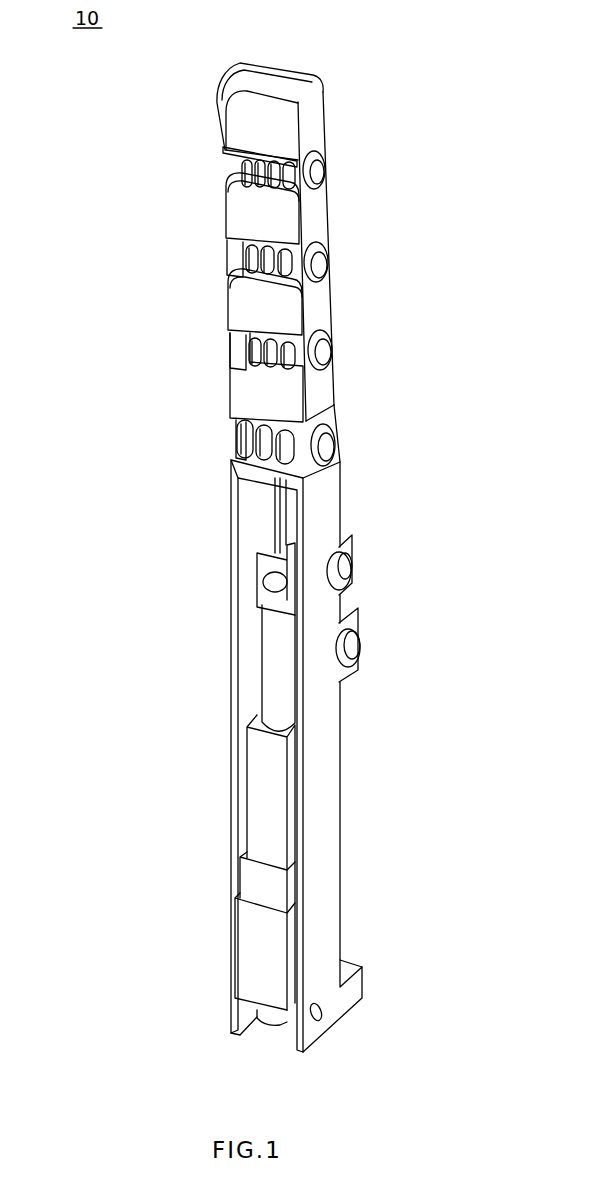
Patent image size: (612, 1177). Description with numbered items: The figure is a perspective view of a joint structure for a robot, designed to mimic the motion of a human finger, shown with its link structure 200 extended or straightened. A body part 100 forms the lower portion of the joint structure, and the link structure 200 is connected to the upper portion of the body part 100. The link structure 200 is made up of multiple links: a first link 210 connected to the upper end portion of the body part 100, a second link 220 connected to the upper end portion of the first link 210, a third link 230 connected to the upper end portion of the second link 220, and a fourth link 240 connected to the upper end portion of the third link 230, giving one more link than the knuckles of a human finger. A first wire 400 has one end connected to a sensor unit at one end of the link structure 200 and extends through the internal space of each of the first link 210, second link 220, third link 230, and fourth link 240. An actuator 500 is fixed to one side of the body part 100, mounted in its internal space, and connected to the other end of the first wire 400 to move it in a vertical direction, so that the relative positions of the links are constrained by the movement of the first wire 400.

The body part 100 is at (328, 823).
The link structure 200 is at (356, 429).
The first link 210 is at (240, 402).
The second link 220 is at (242, 300).
The third link 230 is at (238, 205).
The fourth link 240 is at (232, 124).
The first wire 400 is at (285, 520).
The actuator 500 is at (275, 665).